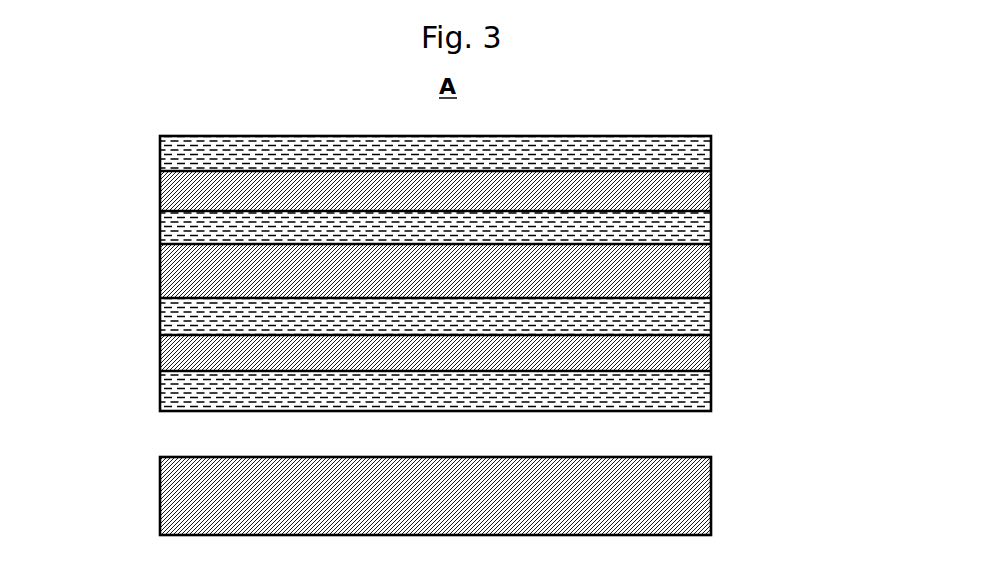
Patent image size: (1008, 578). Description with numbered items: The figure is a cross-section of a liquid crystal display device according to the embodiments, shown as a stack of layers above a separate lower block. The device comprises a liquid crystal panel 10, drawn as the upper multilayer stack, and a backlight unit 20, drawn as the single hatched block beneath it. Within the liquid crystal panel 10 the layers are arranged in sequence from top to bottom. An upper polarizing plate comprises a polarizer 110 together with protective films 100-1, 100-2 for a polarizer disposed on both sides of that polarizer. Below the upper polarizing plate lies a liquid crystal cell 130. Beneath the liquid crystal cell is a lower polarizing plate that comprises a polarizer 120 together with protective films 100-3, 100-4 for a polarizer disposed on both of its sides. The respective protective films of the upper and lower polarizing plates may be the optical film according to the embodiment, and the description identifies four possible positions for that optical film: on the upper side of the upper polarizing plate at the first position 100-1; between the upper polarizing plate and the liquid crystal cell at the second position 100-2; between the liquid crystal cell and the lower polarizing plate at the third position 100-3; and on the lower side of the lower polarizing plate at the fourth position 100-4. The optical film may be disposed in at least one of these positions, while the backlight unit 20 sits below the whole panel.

The liquid crystal panel 10 is at (468, 268).
The backlight unit 20 is at (137, 449).
The protective film for a polarizer 100-1 is at (690, 148).
The protective film for a polarizer 100-2 is at (690, 218).
The protective film for a polarizer 100-3 is at (690, 310).
The protective film for a polarizer 100-4 is at (690, 383).
The polarizer 110 is at (690, 185).
The polarizer 120 is at (690, 348).
The liquid crystal cell 130 is at (690, 265).